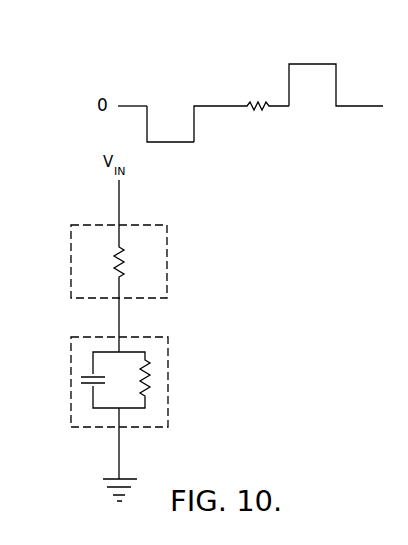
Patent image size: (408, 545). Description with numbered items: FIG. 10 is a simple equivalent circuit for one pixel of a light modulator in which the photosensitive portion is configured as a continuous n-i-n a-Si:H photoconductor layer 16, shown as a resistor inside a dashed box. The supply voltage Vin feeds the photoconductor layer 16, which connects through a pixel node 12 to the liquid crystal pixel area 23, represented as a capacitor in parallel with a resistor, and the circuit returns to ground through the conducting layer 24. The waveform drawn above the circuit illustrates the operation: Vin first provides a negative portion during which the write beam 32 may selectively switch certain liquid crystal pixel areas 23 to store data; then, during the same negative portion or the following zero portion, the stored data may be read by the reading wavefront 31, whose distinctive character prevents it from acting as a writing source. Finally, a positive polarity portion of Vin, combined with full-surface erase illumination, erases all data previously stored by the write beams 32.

The pixel node 12 is at (119, 325).
The photoconductor layer 16 is at (157, 299).
The liquid crystal pixel area 23 is at (168, 417).
The conducting layer 24 is at (119, 447).
The reading wavefront 31 is at (255, 67).
The write beam 32 is at (160, 142).